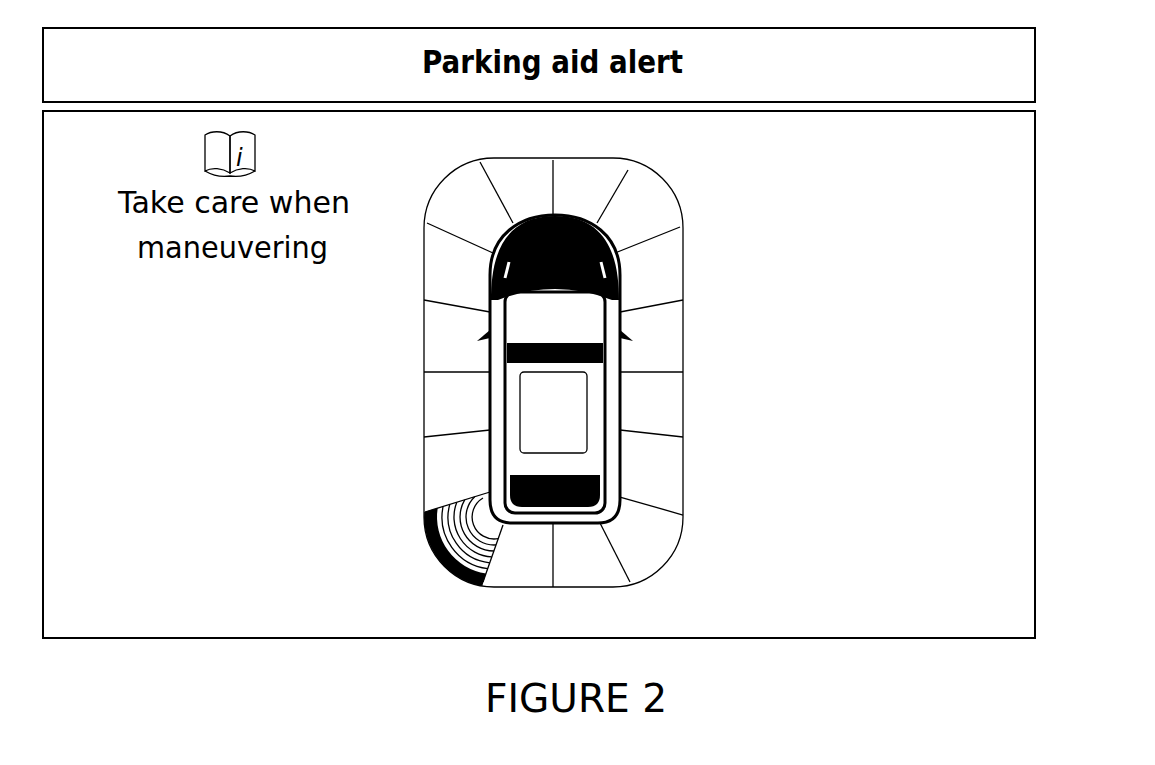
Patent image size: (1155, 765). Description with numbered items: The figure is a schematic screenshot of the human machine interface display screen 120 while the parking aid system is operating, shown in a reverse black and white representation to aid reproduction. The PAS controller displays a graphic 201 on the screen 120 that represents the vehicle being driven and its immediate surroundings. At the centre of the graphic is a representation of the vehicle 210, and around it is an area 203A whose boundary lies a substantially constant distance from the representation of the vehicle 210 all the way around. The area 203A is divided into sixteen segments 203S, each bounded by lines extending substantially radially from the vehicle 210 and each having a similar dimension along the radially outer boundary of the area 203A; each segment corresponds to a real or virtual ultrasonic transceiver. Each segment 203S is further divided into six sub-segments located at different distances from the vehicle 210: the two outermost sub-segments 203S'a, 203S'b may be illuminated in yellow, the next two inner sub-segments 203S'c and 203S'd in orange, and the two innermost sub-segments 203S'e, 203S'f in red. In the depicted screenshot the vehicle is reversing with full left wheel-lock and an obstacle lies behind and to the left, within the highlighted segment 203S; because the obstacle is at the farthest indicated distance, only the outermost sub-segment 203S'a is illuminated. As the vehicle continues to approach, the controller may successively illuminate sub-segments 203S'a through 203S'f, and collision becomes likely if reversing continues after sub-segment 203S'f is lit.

The human machine interface display screen 120 is at (1037, 229).
The graphic 201 is at (856, 177).
The area immediately surrounding the vehicle 203A is at (687, 248).
The segment 203S is at (540, 366).
The outermost sub-segment 203S'a is at (387, 520).
The second outermost sub-segment 203S'b is at (388, 498).
The sub-segment 203S'c is at (389, 477).
The sub-segment 203S'd is at (390, 456).
The innermost sub-segment 203S'e is at (391, 435).
The innermost sub-segment 203S'f is at (395, 414).
The representation of the vehicle 210 is at (577, 303).